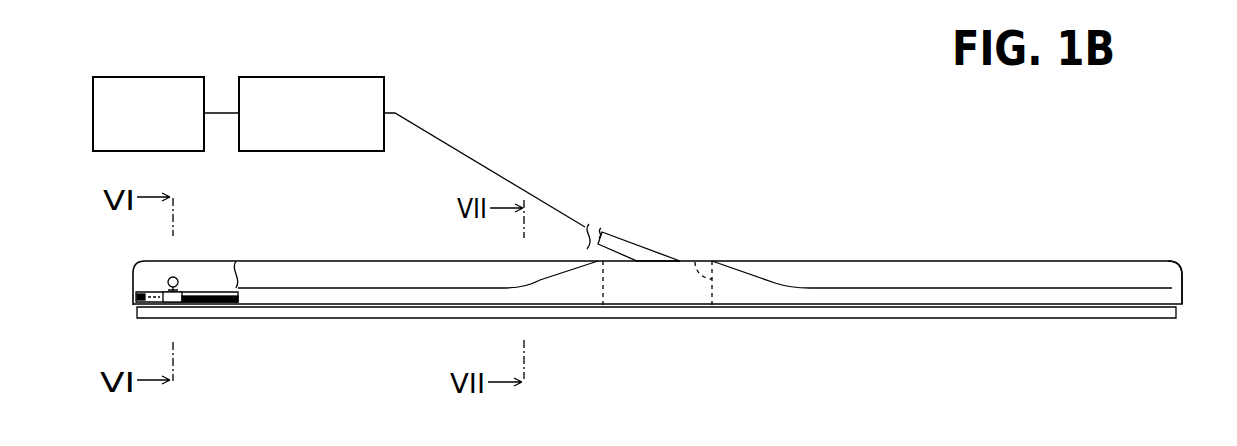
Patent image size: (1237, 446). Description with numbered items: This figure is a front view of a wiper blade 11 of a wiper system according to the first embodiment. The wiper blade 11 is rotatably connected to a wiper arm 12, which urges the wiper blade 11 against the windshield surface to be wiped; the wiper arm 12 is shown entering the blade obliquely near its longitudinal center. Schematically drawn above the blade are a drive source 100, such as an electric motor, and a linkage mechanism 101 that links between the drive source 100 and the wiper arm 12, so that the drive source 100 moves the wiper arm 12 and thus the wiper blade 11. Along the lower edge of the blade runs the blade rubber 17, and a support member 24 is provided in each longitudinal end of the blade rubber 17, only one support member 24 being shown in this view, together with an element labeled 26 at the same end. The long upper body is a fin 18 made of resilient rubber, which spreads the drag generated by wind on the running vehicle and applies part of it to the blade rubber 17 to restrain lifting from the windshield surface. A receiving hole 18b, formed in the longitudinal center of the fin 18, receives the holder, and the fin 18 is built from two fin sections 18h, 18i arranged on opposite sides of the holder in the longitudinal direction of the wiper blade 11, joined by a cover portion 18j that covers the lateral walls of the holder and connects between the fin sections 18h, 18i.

The wiper blade 11 is at (983, 242).
The wiper arm 12 is at (622, 238).
The blade rubber 17 is at (1098, 320).
The fin 18 is at (1177, 262).
The receiving hole 18b is at (705, 255).
The fin section 18h is at (357, 258).
The fin section 18i is at (883, 259).
The cover portion 18j is at (677, 258).
The support member 24 is at (176, 306).
The knob 26 is at (174, 276).
The drive source 100 is at (146, 77).
The linkage mechanism 101 is at (338, 77).